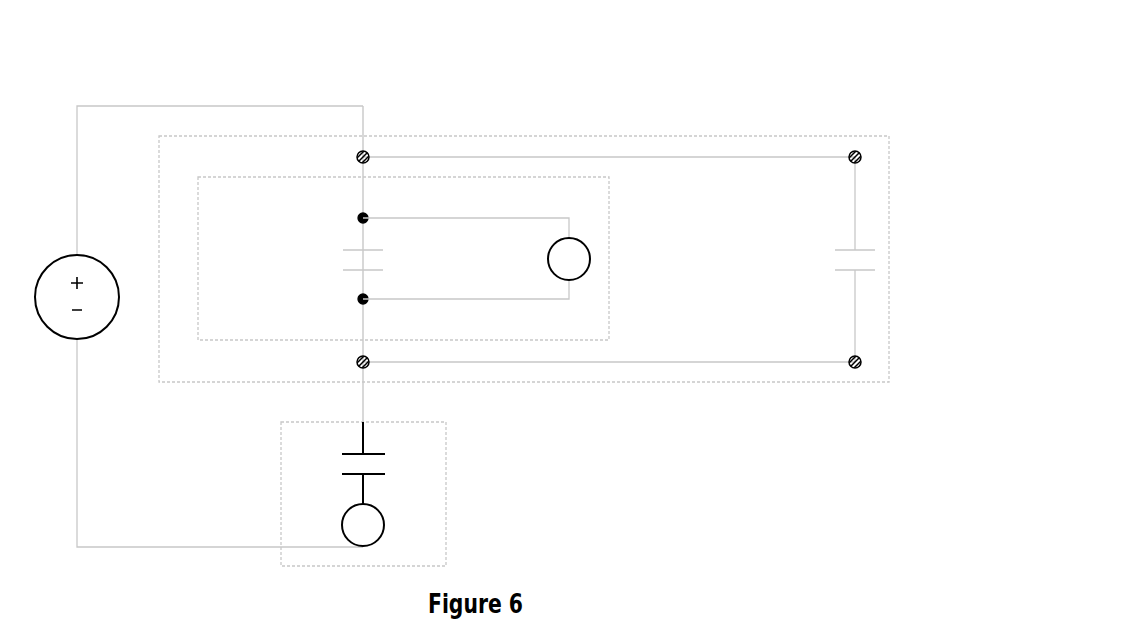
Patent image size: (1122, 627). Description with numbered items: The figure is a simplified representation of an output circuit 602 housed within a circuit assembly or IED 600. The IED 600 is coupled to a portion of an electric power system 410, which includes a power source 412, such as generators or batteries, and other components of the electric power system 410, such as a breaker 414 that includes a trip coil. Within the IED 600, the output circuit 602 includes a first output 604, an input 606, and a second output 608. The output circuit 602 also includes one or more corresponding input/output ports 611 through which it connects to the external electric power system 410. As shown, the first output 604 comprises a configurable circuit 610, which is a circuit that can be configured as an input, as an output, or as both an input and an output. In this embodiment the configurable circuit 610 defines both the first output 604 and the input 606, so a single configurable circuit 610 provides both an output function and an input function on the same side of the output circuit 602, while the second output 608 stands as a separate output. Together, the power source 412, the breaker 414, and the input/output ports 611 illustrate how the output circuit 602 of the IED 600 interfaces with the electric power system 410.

The electric power system 410 is at (186, 567).
The power source 412 is at (86, 338).
The breaker 414 is at (447, 445).
The IED 600 is at (524, 269).
The output circuit 602 is at (741, 383).
The first output 604 is at (313, 285).
The input 606 is at (520, 285).
The second output 608 is at (808, 285).
The configurable circuit 610 is at (610, 199).
The input/output ports 611 is at (365, 125).